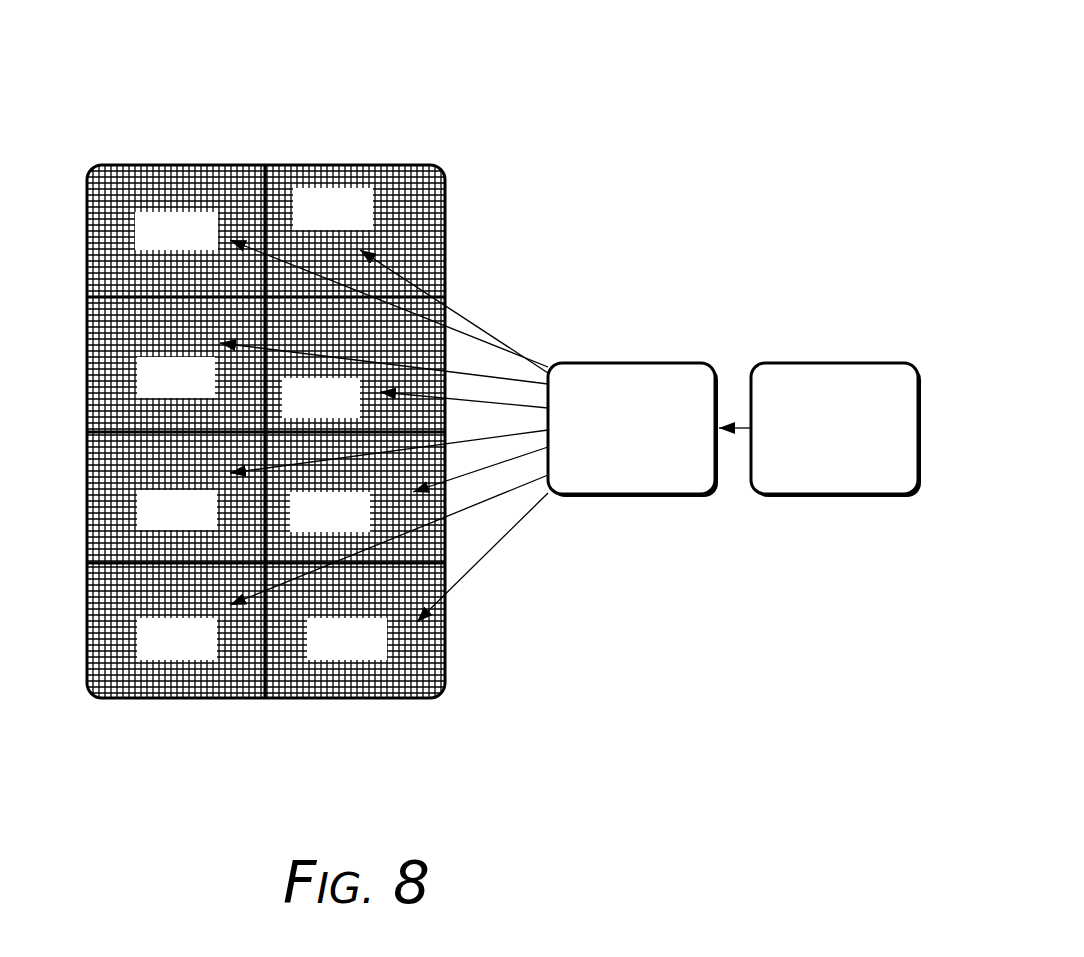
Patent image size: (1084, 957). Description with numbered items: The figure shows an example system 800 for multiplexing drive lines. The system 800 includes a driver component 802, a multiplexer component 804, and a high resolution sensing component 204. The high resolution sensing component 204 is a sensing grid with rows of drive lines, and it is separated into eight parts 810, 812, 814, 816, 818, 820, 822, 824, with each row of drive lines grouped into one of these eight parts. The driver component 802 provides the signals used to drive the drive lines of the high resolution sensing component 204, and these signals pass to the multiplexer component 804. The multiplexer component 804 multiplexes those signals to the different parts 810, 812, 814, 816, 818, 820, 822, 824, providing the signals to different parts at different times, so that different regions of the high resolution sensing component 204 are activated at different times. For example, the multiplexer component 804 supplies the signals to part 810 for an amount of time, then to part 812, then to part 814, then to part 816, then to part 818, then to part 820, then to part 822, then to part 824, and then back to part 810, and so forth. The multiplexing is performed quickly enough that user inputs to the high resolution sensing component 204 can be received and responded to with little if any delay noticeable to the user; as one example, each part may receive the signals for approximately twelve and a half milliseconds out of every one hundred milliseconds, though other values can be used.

The system 800 is at (587, 74).
The high resolution sensing component 204 is at (204, 164).
The part 810 is at (155, 245).
The part 812 is at (155, 390).
The part 814 is at (155, 522).
The part 816 is at (155, 653).
The part 818 is at (310, 222).
The part 820 is at (299, 410).
The part 822 is at (308, 525).
The part 824 is at (323, 653).
The multiplexer component 804 is at (611, 467).
The driver component 802 is at (816, 467).